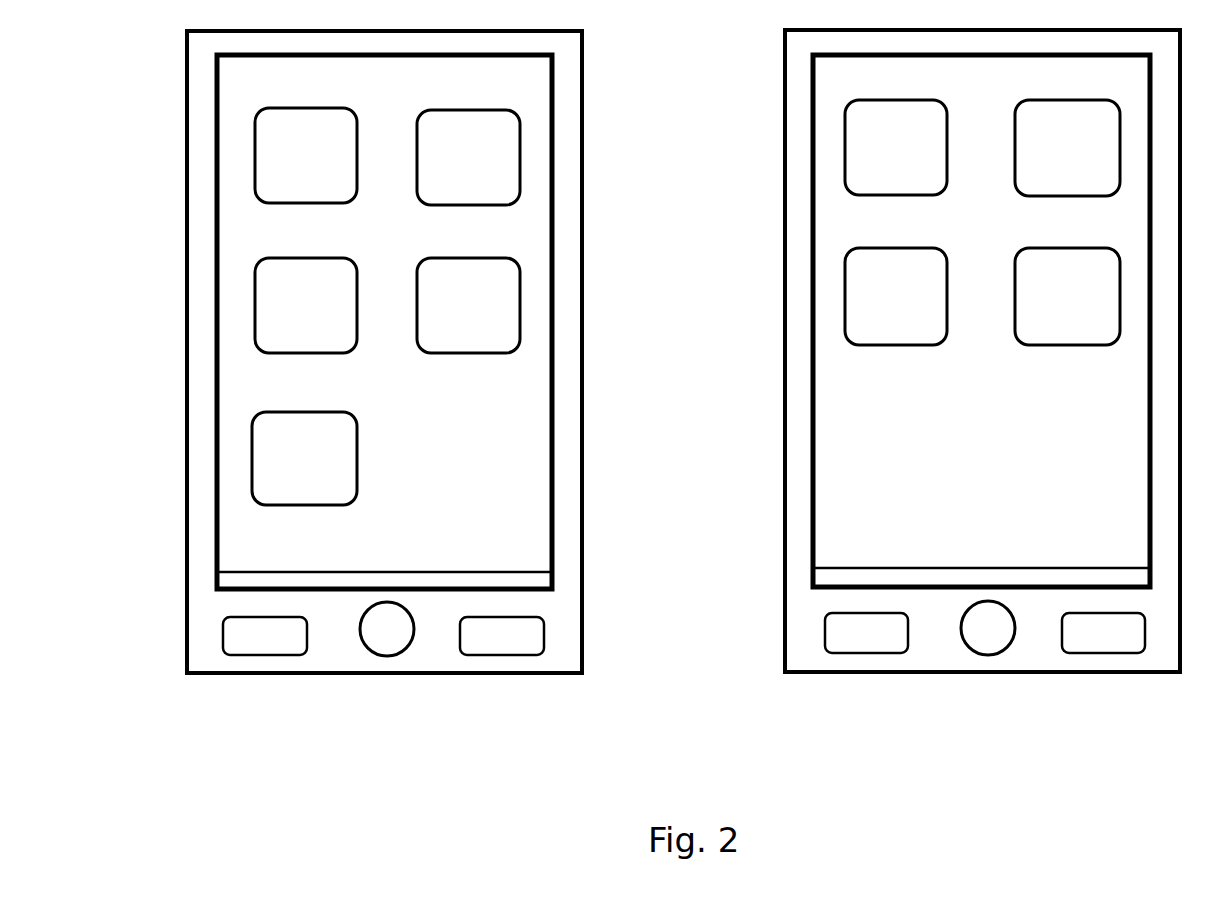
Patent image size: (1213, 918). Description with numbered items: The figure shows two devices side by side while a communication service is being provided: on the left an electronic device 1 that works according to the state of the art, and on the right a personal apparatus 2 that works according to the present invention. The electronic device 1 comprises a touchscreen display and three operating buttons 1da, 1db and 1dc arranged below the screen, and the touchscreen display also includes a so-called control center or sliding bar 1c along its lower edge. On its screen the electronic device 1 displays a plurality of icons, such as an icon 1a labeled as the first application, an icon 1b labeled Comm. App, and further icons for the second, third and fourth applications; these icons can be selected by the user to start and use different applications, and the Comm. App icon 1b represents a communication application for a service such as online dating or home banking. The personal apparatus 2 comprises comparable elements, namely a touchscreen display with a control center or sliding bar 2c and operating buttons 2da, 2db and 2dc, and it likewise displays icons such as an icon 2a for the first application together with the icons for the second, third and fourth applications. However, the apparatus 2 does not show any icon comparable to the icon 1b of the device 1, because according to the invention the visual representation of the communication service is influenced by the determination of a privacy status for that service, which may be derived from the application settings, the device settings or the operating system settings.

The electronic device 1 is at (243, 80).
The icon 1a is at (255, 160).
The icon 1b is at (252, 462).
The control center or sliding bar 1c is at (277, 578).
The operating button 1da is at (253, 642).
The operating button 1db is at (388, 642).
The operating button 1dc is at (492, 642).
The personal apparatus 2 is at (843, 78).
The icon 2a is at (843, 155).
The control center or sliding bar 2c is at (857, 577).
The operating button 2da is at (847, 640).
The operating button 2db is at (990, 636).
The operating button 2dc is at (1100, 636).